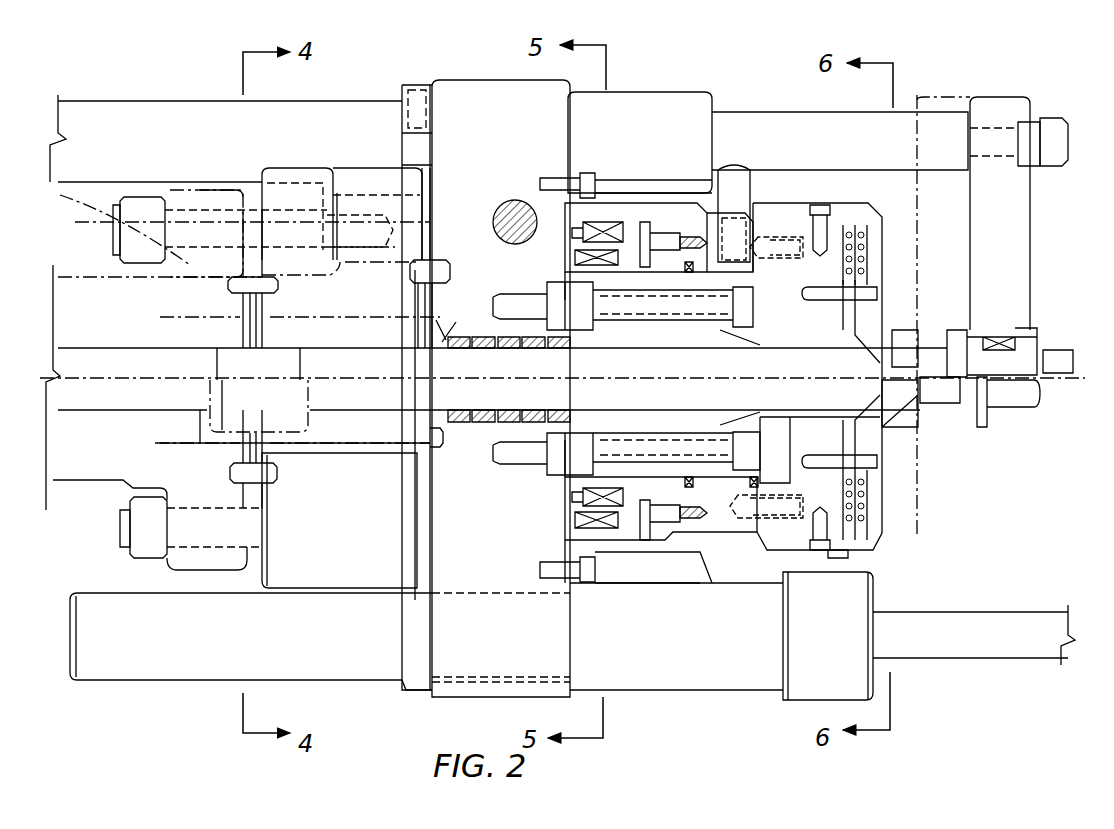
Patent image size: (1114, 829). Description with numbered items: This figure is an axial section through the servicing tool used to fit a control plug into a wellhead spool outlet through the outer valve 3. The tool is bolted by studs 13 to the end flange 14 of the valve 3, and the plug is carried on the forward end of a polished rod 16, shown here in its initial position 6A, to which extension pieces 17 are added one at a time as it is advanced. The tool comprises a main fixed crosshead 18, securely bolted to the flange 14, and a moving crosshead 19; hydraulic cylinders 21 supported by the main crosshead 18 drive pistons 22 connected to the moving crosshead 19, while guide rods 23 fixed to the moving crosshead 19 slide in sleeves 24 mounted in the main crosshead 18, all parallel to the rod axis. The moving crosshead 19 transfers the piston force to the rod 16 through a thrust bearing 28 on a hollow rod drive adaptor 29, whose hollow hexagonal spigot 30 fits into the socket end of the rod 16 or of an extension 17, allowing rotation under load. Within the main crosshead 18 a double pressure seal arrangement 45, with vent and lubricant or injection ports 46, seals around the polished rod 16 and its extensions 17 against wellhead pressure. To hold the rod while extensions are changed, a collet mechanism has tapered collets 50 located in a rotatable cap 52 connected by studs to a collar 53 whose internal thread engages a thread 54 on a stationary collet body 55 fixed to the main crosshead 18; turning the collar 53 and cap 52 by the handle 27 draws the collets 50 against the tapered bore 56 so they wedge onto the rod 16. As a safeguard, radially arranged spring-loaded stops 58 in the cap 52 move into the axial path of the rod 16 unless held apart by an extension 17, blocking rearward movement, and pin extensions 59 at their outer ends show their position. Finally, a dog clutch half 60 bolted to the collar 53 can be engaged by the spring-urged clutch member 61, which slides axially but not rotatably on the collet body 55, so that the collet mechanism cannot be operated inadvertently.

The valve 3 is at (72, 205).
The studs 13 is at (258, 220).
The end flange 14 is at (180, 563).
The rod 16 is at (135, 352).
The extension pieces 17 is at (390, 353).
The main crosshead 18 is at (457, 66).
The moving crosshead 19 is at (946, 97).
The hydraulic drive cylinders 21 is at (730, 683).
The pistons 22 is at (1005, 596).
The guide rods 23 is at (760, 118).
The sleeves 24 is at (685, 105).
The handle 27 is at (745, 185).
The thrust bearing 28 is at (995, 330).
The rod drive adaptor 29 is at (1008, 398).
The hollow hexagonal spigot 30 is at (912, 418).
The double pressure seal arrangement 45 is at (462, 436).
The vent and lubricant or injection ports 46 is at (440, 342).
The collets 50 is at (718, 420).
The rotatable cap 52 is at (830, 278).
The collar 53 is at (768, 222).
The thread 54 is at (775, 335).
The collet body 55 is at (618, 282).
The tapered bore 56 is at (690, 330).
The stops 58 is at (855, 318).
The pin extension 59 is at (866, 550).
The dog clutch half 60 is at (660, 225).
The clutch member 61 is at (618, 222).
The initial position 6A is at (207, 418).